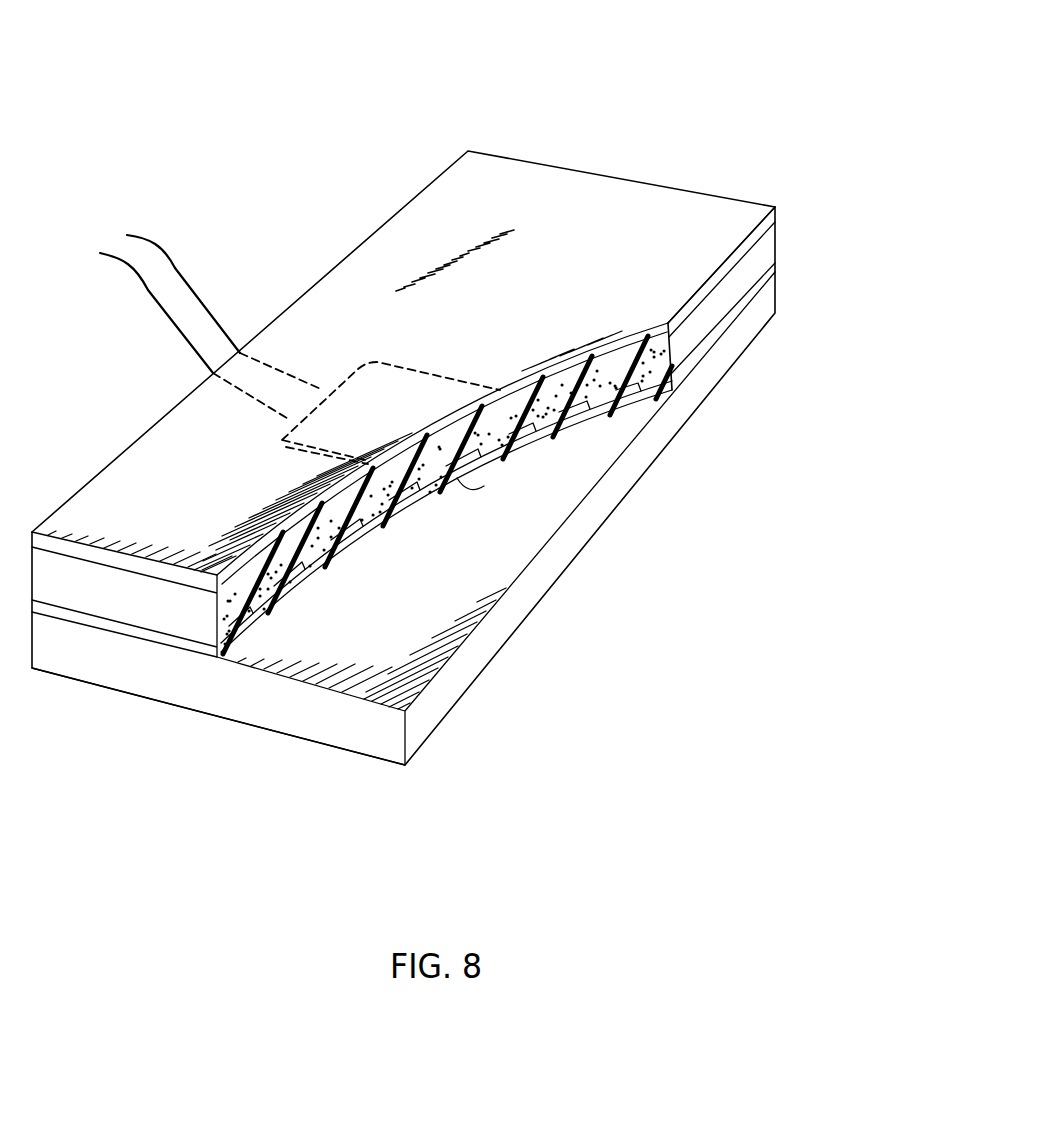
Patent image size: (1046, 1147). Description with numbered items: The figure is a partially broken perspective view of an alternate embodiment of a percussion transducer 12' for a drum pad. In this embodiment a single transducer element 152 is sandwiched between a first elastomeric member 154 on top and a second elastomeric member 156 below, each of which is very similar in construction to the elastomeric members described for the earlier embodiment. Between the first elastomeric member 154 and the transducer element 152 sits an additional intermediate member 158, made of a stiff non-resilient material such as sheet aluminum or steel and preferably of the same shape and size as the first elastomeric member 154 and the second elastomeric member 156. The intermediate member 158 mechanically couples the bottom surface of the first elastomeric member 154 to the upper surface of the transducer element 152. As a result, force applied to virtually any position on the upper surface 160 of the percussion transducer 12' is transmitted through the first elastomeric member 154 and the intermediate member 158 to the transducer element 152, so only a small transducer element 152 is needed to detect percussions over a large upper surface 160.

The percussion transducer 12' is at (472, 392).
The transducer element 152 is at (500, 465).
The first elastomeric member 154 is at (783, 202).
The second elastomeric member 156 is at (783, 277).
The intermediate member 158 is at (637, 403).
The upper surface 160 is at (580, 259).